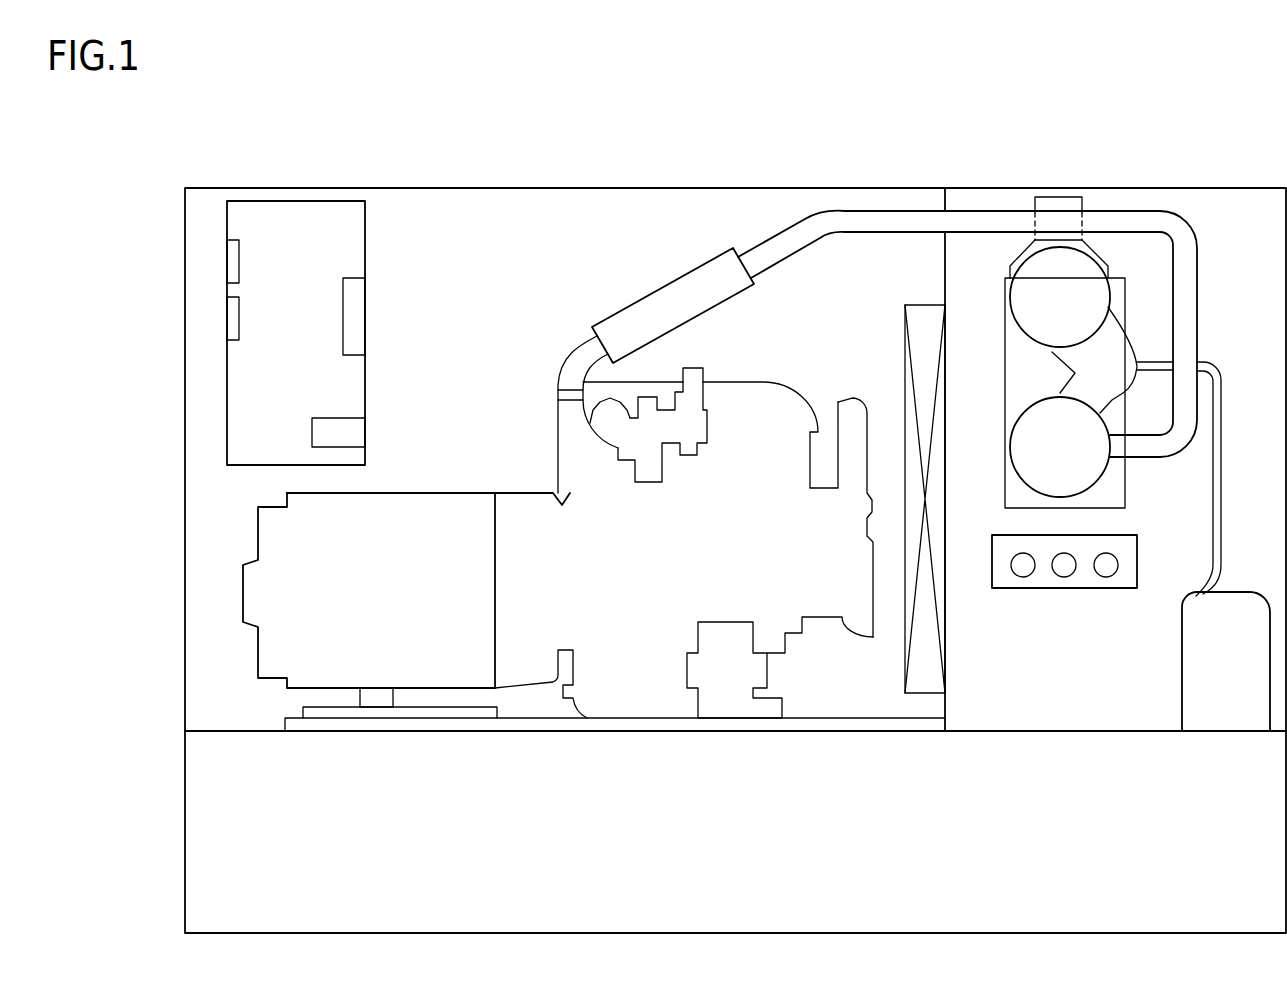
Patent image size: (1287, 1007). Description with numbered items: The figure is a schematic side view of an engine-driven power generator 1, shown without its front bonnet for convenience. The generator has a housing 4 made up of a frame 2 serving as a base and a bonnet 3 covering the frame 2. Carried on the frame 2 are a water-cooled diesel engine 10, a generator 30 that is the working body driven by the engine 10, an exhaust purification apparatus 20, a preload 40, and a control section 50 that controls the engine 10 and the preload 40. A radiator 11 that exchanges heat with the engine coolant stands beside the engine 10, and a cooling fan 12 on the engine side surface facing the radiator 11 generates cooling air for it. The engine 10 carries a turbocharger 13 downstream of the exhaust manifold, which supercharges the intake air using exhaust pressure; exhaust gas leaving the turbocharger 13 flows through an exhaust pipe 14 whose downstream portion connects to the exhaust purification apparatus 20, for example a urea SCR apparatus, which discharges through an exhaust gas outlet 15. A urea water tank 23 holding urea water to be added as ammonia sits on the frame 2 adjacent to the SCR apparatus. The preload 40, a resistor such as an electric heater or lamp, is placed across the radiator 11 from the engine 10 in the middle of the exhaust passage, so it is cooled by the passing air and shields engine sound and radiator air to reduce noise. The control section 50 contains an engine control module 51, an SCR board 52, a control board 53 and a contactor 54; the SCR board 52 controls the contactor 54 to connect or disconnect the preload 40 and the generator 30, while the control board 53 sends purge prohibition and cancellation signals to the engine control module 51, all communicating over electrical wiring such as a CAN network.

The engine-driven power generator 1 is at (270, 126).
The frame 2 is at (185, 758).
The bonnet 3 is at (185, 705).
The housing 4 is at (132, 682).
The engine 10 is at (757, 405).
The radiator 11 is at (928, 318).
The cooling fan 12 is at (848, 415).
The turbocharger 13 is at (648, 413).
The exhaust pipe 14 is at (898, 223).
The exhaust gas outlet 15 is at (1057, 200).
The exhaust purification apparatus 20 is at (1080, 268).
The urea water tank 23 is at (1188, 700).
The generator 30 is at (470, 515).
The preload 40 is at (1127, 548).
The control section 50 is at (305, 209).
The engine control module 51 is at (360, 308).
The SCR board 52 is at (240, 262).
The control board 53 is at (240, 320).
The contactor 54 is at (360, 430).